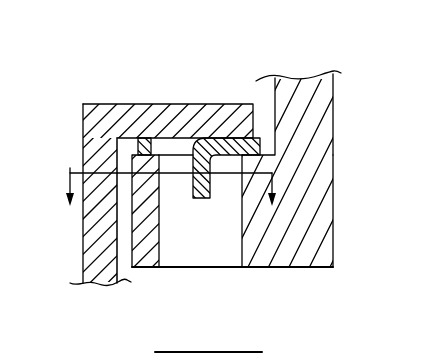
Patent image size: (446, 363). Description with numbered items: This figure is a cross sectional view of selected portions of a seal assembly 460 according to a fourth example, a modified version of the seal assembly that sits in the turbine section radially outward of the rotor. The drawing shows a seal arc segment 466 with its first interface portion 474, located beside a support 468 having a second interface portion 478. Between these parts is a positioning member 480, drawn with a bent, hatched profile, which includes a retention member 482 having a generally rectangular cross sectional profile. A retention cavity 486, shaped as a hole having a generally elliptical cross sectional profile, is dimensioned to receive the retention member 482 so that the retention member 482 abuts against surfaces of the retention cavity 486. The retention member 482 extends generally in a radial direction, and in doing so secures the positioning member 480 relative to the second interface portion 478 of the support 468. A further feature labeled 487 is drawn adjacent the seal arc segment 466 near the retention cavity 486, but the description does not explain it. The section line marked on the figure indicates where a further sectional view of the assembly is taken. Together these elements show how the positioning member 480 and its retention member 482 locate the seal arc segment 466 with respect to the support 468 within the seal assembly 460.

The seal assembly 460 is at (268, 60).
The seal arc segment 466 is at (121, 100).
The support 468 is at (338, 114).
The first interface portion 474 is at (175, 104).
The second interface portion 478 is at (323, 192).
The positioning member 480 is at (204, 138).
The retention member 482 is at (212, 184).
The retention cavity 486 is at (160, 226).
The gap 487 is at (132, 238).